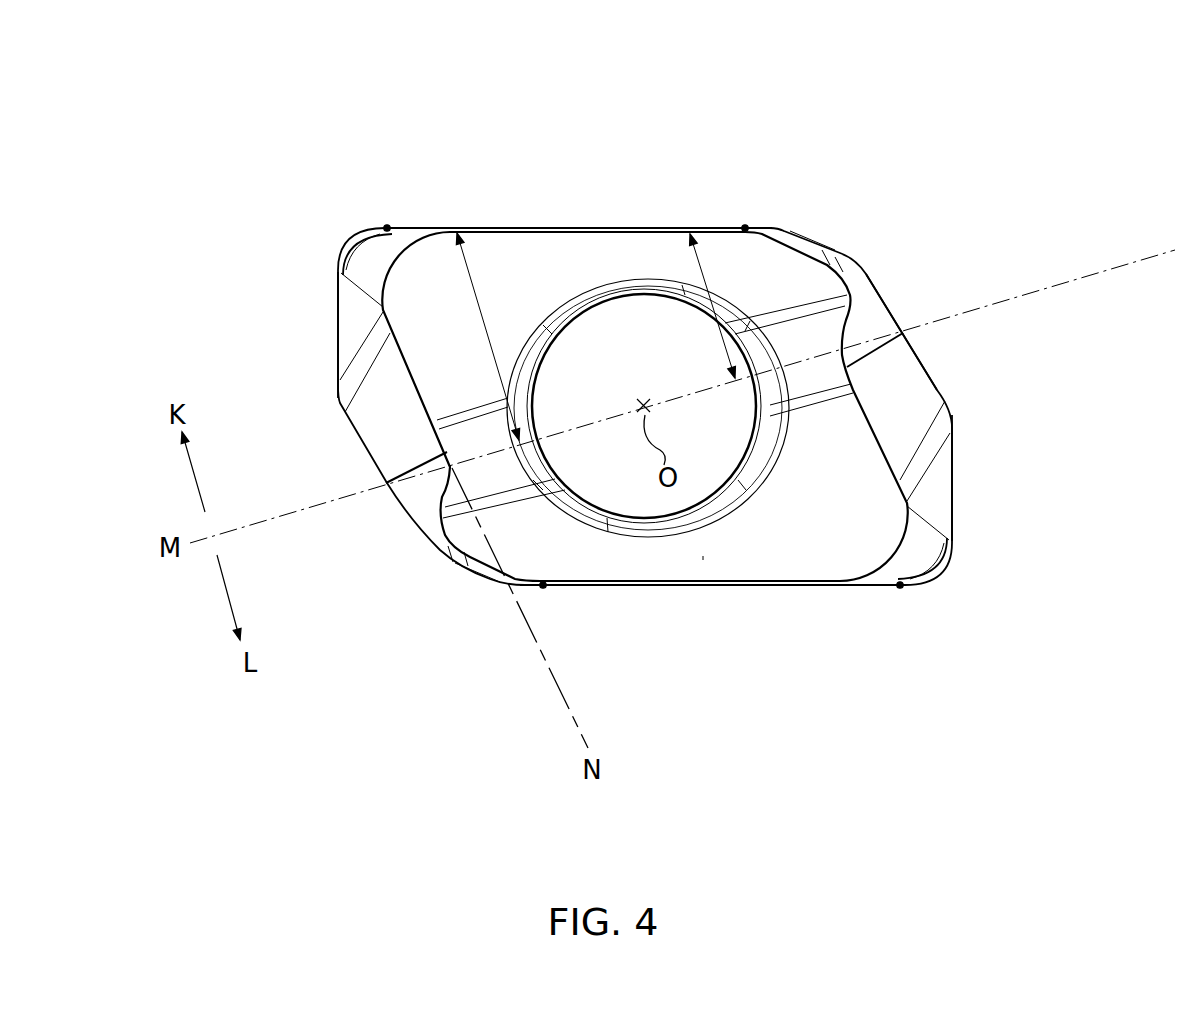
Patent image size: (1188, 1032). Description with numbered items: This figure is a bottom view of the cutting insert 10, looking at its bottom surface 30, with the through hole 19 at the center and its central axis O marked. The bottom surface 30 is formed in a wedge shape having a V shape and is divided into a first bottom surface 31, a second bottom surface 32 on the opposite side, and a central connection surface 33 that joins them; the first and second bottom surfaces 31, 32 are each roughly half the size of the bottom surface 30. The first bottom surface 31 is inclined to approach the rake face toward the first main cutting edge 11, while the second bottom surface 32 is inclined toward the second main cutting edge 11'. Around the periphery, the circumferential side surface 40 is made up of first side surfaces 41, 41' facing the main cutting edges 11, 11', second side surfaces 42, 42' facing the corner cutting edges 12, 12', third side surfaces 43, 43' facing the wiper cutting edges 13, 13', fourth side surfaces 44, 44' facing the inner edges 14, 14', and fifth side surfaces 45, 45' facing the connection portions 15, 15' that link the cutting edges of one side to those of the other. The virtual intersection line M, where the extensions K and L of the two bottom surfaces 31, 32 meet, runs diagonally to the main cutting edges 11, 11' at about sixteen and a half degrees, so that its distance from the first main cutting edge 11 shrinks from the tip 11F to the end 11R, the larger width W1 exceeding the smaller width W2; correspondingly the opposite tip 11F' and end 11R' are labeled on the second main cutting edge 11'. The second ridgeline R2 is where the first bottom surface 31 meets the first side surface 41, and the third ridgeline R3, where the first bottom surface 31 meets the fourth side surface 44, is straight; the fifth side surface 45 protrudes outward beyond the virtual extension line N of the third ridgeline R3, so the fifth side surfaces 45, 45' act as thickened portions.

The cutting insert 10 is at (612, 845).
The first main cutting edge 11 is at (586, 151).
The second main cutting edge 11' is at (705, 655).
The tip of the first main cutting edge 11F is at (397, 149).
The end of the first main cutting edge 11R is at (781, 157).
The front end of cutting edge 11F' is at (937, 647).
The rear end of cutting edge 11R' is at (511, 638).
The first corner cutting edge 12 is at (347, 193).
The second corner cutting edge 12' is at (969, 589).
The first wiper cutting edge 13 is at (276, 335).
The second wiper cutting edge 13' is at (1013, 478).
The first inner edge 14 is at (352, 460).
The second inner edge 14' is at (943, 342).
The first connection portion 15 is at (415, 609).
The second connection portion 15' is at (903, 227).
The through hole 19 is at (597, 302).
The bottom surface 30 is at (780, 548).
The first bottom surface 31 is at (573, 230).
The second bottom surface 32 is at (703, 557).
The central connection surface 33 is at (440, 492).
The circumferential side surface 40 is at (912, 422).
The first side surface 41 is at (535, 152).
The first side surface 41' is at (589, 664).
The second side surface 42 is at (354, 153).
The second side surface 42' is at (975, 635).
The third side surface 43 is at (307, 328).
The third side surface 43' is at (1002, 484).
The fourth side surface 44 is at (383, 413).
The fourth side surface 44' is at (920, 389).
The fifth side surface 45 is at (460, 627).
The fifth side surface 45' is at (862, 141).
The second ridgeline R2 is at (572, 243).
The third ridgeline R3 is at (410, 384).
The distance from virtual intersection line to first main cutting edge at tip side W1 is at (482, 336).
The distance from virtual intersection line to first main cutting edge at end side W2 is at (705, 306).